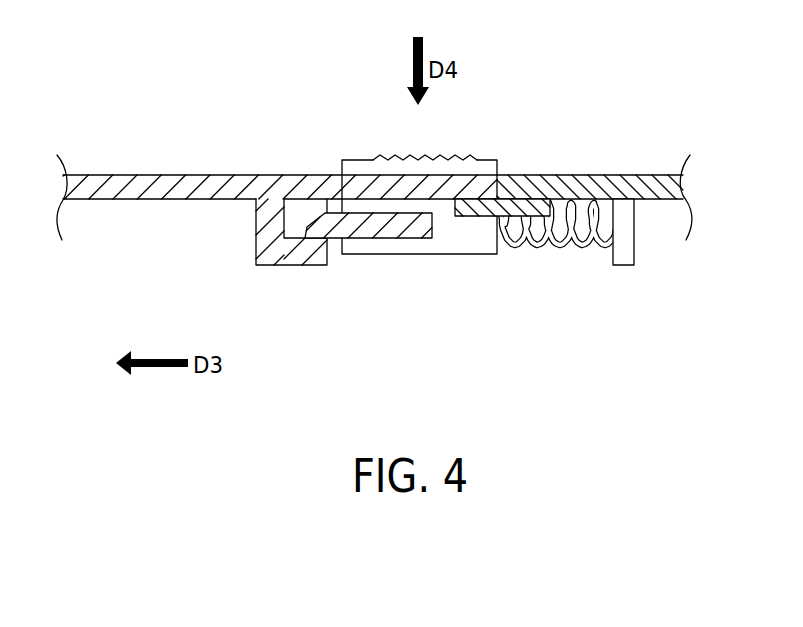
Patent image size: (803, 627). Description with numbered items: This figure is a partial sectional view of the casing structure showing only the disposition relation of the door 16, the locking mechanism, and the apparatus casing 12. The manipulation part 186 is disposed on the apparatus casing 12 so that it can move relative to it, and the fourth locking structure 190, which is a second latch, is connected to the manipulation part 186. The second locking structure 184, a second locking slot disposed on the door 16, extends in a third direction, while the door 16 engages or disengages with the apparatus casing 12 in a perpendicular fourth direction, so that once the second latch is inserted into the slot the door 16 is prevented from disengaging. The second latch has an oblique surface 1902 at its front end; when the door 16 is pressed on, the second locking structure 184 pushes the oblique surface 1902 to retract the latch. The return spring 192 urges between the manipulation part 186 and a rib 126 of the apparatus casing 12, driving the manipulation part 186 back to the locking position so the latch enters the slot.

The apparatus casing 12 is at (627, 187).
The door 16 is at (162, 190).
The rib 126 is at (625, 256).
The second locking structure 184 is at (273, 262).
The manipulation part 186 is at (484, 162).
The fourth locking structure 190 is at (393, 253).
The oblique surface 1902 is at (310, 211).
The return spring 192 is at (552, 248).